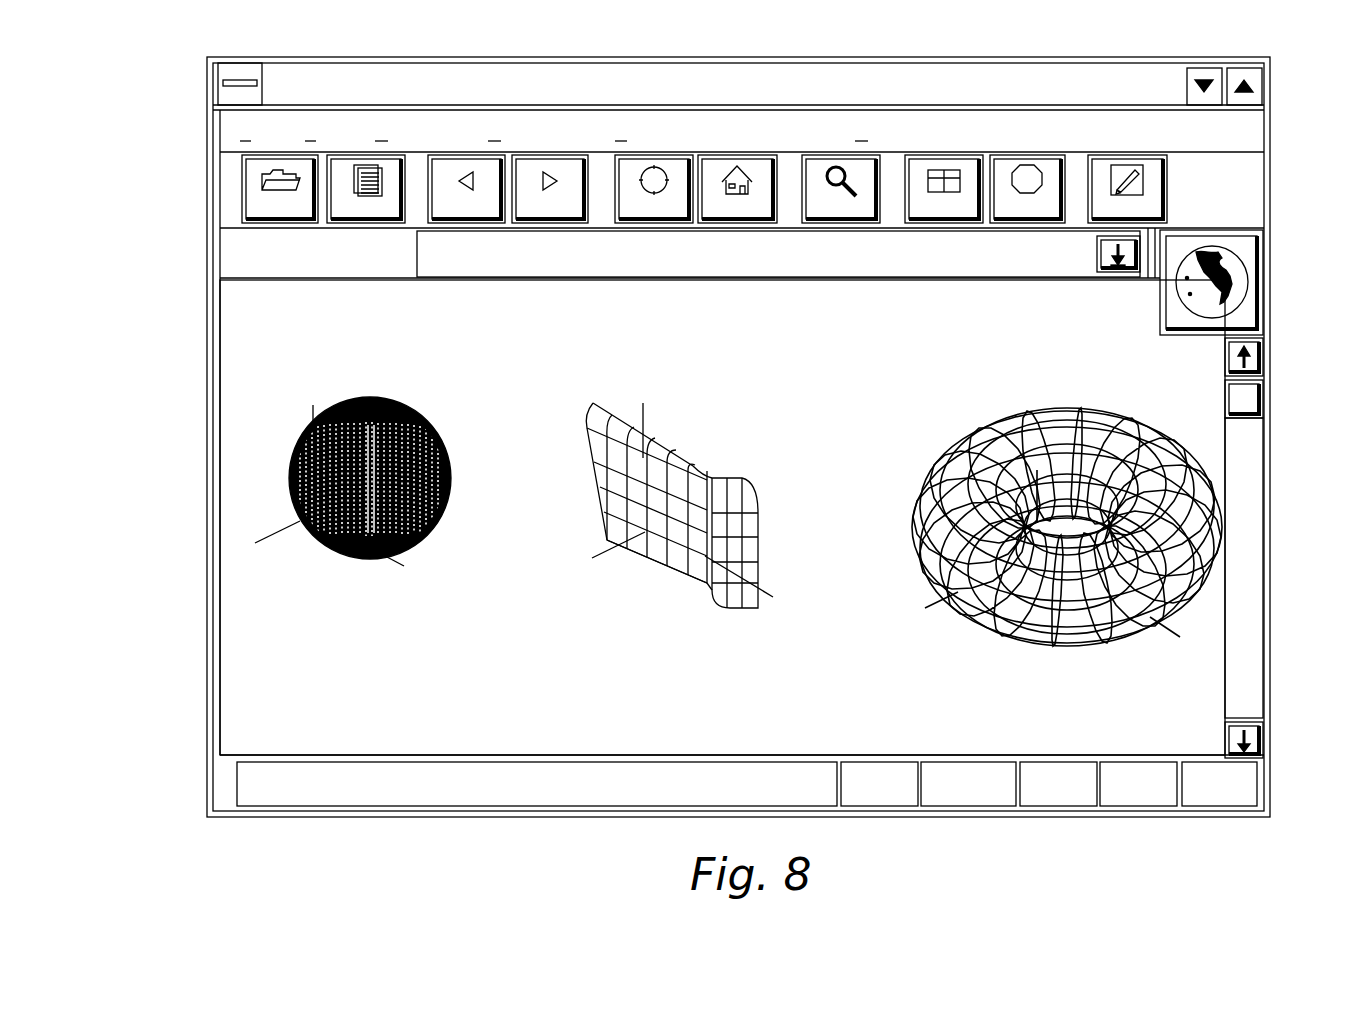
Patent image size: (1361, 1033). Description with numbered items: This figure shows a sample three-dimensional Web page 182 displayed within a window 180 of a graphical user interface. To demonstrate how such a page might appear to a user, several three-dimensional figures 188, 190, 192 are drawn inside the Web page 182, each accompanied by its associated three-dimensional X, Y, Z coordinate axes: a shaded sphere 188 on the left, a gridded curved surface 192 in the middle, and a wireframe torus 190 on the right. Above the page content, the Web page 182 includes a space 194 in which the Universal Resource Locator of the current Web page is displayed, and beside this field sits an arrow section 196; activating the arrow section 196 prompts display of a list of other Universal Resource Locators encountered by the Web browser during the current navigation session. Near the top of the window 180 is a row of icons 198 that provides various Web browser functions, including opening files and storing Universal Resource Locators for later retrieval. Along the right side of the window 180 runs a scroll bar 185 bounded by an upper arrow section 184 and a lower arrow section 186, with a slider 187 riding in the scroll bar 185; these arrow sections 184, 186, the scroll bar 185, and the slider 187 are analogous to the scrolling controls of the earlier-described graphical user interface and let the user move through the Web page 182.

The window 180 is at (172, 60).
The three-dimensional Web page 182 is at (244, 407).
The arrow section 184 is at (1252, 366).
The scroll bar 185 is at (1248, 576).
The arrow section 186 is at (1252, 740).
The slider 187 is at (1250, 400).
The three-dimensional figure 188 is at (335, 558).
The three-dimensional figure 190 is at (1005, 637).
The three-dimensional figure 192 is at (733, 610).
The URL entry field 194 is at (810, 260).
The arrow section 196 is at (1098, 262).
The row of icons 198 is at (228, 188).